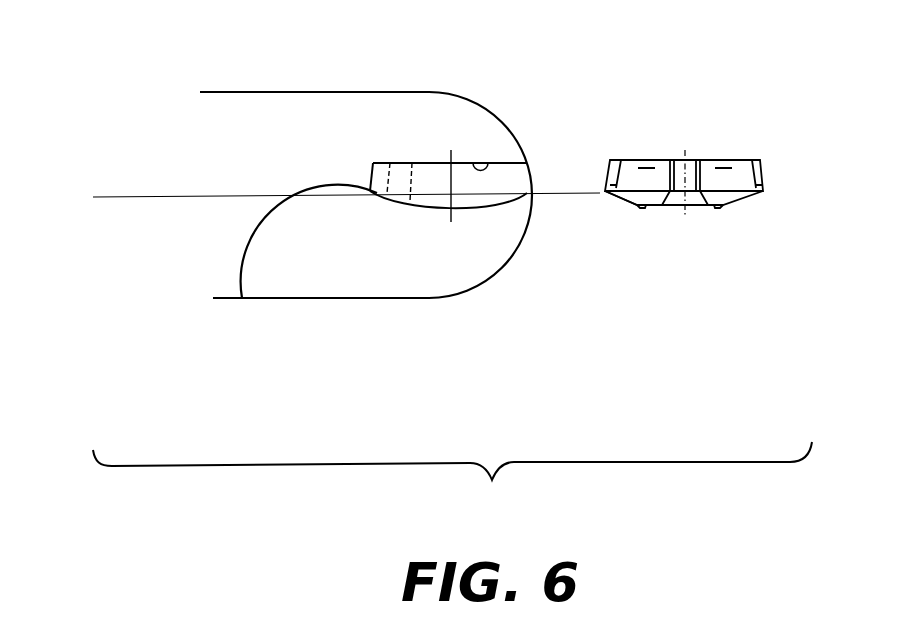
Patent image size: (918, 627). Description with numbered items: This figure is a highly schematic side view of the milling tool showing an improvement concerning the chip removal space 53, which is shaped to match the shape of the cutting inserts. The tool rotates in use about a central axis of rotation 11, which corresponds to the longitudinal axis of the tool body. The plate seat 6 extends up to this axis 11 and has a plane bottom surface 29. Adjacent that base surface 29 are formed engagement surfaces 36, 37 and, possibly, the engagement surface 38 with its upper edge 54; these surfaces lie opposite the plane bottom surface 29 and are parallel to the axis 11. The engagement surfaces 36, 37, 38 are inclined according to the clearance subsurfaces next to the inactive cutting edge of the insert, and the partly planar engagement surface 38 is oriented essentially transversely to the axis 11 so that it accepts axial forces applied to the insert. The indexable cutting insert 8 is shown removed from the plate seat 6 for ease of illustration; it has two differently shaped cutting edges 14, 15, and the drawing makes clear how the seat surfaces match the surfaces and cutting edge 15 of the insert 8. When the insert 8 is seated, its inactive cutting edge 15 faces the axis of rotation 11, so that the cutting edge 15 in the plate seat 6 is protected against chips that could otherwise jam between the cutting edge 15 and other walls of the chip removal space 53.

The plate seat 6 is at (506, 177).
The indexable cutting insert 8 is at (709, 137).
The central axis of rotation 11 is at (133, 197).
The cutting edge 14 is at (645, 208).
The cutting edge 15 is at (630, 205).
The base surface 29 is at (488, 163).
The engagement surface 36 is at (474, 180).
The engagement surface 37 is at (393, 200).
The engagement surface 38 is at (373, 163).
The chip removal space 53 is at (360, 257).
The upper edge 54 is at (433, 207).